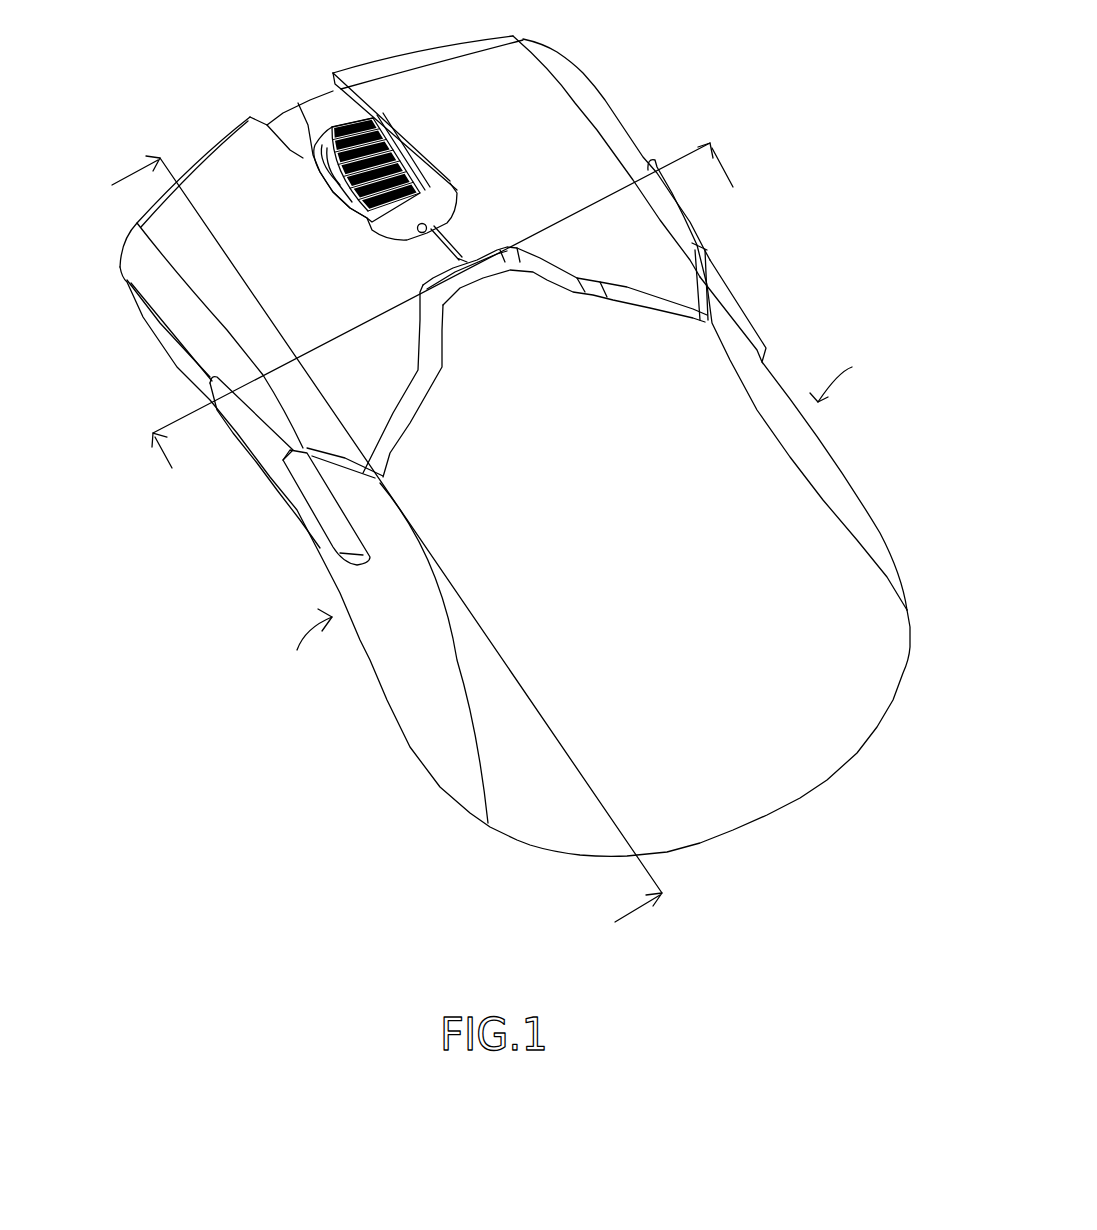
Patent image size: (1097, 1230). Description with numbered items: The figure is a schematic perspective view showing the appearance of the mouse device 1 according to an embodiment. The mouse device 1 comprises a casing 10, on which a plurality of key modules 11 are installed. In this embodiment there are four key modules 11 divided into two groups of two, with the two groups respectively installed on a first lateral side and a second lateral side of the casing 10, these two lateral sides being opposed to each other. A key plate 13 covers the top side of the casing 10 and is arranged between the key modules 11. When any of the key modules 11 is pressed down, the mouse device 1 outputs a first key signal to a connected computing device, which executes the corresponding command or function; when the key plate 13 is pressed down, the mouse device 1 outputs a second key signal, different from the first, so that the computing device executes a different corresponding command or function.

The mouse device 1 is at (501, 489).
The casing 10 is at (820, 747).
The key module 11 is at (253, 438).
The key plate 13 is at (554, 97).